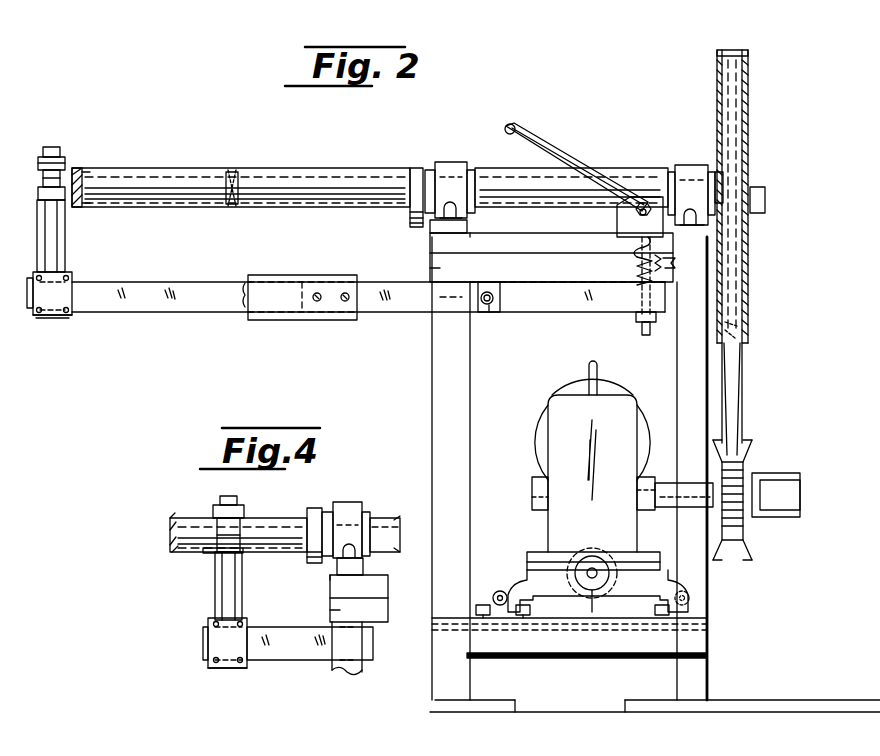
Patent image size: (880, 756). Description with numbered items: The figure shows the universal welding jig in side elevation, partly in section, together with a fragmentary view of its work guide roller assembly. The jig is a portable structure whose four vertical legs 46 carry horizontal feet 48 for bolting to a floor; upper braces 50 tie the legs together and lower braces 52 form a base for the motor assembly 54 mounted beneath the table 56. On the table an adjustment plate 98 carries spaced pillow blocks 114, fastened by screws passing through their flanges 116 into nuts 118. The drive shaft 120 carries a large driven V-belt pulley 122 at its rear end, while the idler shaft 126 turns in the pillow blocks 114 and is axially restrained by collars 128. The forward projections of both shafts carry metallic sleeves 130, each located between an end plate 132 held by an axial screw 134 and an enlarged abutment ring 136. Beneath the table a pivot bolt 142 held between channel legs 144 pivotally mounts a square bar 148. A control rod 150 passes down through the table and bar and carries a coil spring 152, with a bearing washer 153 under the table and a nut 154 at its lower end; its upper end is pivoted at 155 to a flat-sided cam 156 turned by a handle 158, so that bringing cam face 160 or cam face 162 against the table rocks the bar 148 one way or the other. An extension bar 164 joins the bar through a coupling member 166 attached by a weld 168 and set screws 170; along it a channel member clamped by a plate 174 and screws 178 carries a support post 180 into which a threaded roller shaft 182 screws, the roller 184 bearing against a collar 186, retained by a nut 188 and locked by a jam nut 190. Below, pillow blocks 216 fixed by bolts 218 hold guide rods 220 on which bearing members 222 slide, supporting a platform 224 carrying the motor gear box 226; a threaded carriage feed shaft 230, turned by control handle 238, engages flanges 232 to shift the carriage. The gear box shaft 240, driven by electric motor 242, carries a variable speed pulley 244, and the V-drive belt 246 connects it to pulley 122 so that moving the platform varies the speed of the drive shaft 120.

In FIG. 2, the vertical legs 46 is at (432, 376).
In FIG. 4, the vertical legs 46 is at (356, 670).
In FIG. 2, the feet 48 is at (615, 700).
In FIG. 2, the braces 50 is at (432, 267).
In FIG. 4, the braces 50 is at (334, 610).
In FIG. 2, the braces 52 is at (562, 658).
In FIG. 2, the motor assembly 54 is at (535, 418).
In FIG. 2, the table 56 is at (500, 247).
In FIG. 4, the table 56 is at (380, 590).
In FIG. 2, the adjustment plate 98 is at (472, 236).
In FIG. 4, the adjustment plate 98 is at (330, 580).
In FIG. 2, the pillow blocks 114 is at (445, 162).
In FIG. 4, the pillow blocks 114 is at (346, 502).
In FIG. 2, the flanges 116 is at (436, 228).
In FIG. 4, the flanges 116 is at (363, 566).
In FIG. 4, the nuts 118 is at (343, 560).
In FIG. 2, the drive shaft 120 is at (195, 177).
In FIG. 4, the drive shaft 120 is at (396, 518).
In FIG. 2, the driven V-belt pulley 122 is at (717, 80).
In FIG. 2, the idler shaft 126 is at (232, 176).
In FIG. 4, the idler shaft 126 is at (172, 536).
In FIG. 2, the collars 128 is at (430, 170).
In FIG. 4, the collars 128 is at (326, 512).
In FIG. 2, the metallic sleeves 130 is at (160, 168).
In FIG. 4, the metallic sleeves 130 is at (190, 518).
In FIG. 2, the end plates 132 is at (80, 168).
In FIG. 2, the screws 134 is at (86, 172).
In FIG. 2, the abutment rings 136 is at (410, 172).
In FIG. 4, the abutment rings 136 is at (310, 508).
In FIG. 2, the pivot bolt 142 is at (493, 308).
In FIG. 2, the legs 144 is at (484, 312).
In FIG. 2, the bar 148 is at (378, 312).
In FIG. 2, the control rod 150 is at (644, 334).
In FIG. 2, the coil spring 152 is at (640, 283).
In FIG. 2, the bearing washer 153 is at (666, 268).
In FIG. 2, the nut 154 is at (636, 317).
In FIG. 2, the pivot 155 is at (640, 205).
In FIG. 2, the cam 156 is at (644, 208).
In FIG. 2, the handle 158 is at (516, 128).
In FIG. 2, the cam face 160 is at (620, 222).
In FIG. 2, the cam face 162 is at (635, 258).
In FIG. 2, the extension bar 164 is at (96, 304).
In FIG. 4, the extension bar 164 is at (296, 660).
In FIG. 2, the coupling member 166 is at (262, 316).
In FIG. 2, the weld 168 is at (244, 283).
In FIG. 2, the set screws 170 is at (345, 293).
In FIG. 2, the plate 174 is at (72, 285).
In FIG. 4, the plate 174 is at (210, 634).
In FIG. 2, the screws 178 is at (48, 316).
In FIG. 4, the screws 178 is at (218, 668).
In FIG. 2, the support post 180 is at (60, 258).
In FIG. 4, the support post 180 is at (258, 595).
In FIG. 2, the roller shaft 182 is at (60, 200).
In FIG. 4, the roller shaft 182 is at (242, 552).
In FIG. 2, the roller 184 is at (62, 157).
In FIG. 4, the roller 184 is at (218, 506).
In FIG. 2, the collar 186 is at (43, 176).
In FIG. 4, the collar 186 is at (242, 528).
In FIG. 2, the nut 188 is at (50, 147).
In FIG. 4, the nut 188 is at (232, 497).
In FIG. 2, the jam nut 190 is at (43, 196).
In FIG. 4, the jam nut 190 is at (200, 566).
In FIG. 2, the pillow blocks 216 is at (497, 592).
In FIG. 2, the bolts 218 is at (486, 615).
In FIG. 2, the guide rods 220 is at (501, 591).
In FIG. 2, the bearing members 222 is at (538, 592).
In FIG. 2, the platform 224 is at (628, 556).
In FIG. 2, the motor gear box 226 is at (565, 395).
In FIG. 2, the carriage feed shaft 230 is at (578, 565).
In FIG. 2, the flanges 232 is at (524, 615).
In FIG. 2, the control handle 238 is at (588, 614).
In FIG. 2, the shaft 240 is at (654, 507).
In FIG. 2, the electric motor 242 is at (535, 455).
In FIG. 2, the variable speed V-belt pulley 244 is at (752, 445).
In FIG. 2, the V-drive belt 246 is at (736, 370).